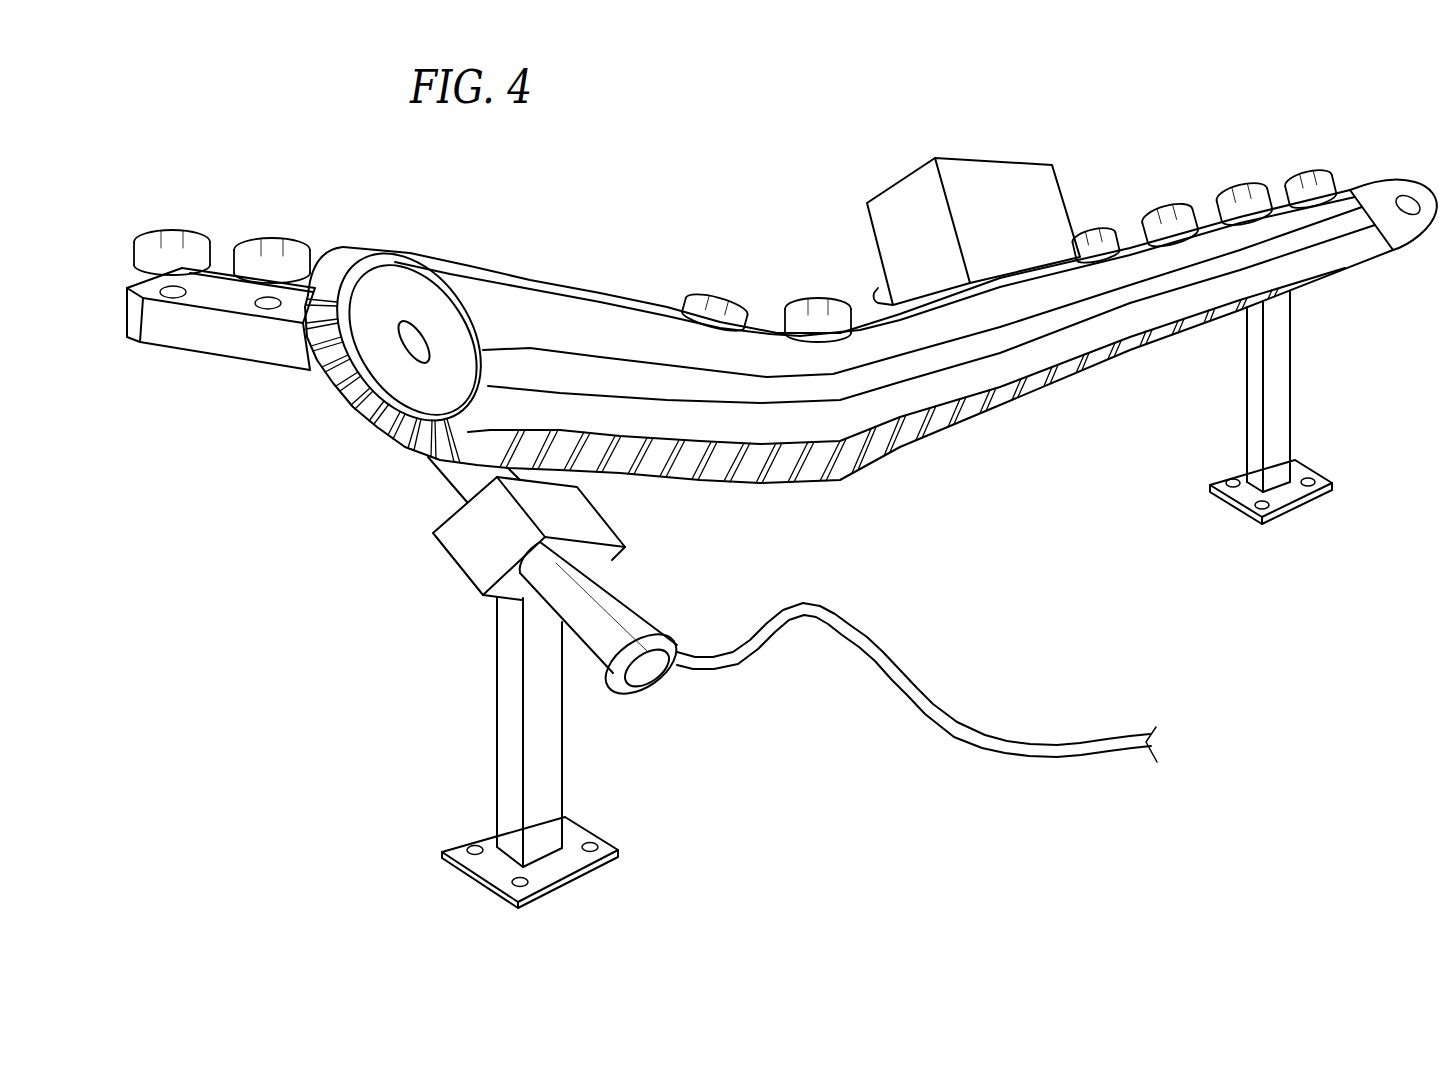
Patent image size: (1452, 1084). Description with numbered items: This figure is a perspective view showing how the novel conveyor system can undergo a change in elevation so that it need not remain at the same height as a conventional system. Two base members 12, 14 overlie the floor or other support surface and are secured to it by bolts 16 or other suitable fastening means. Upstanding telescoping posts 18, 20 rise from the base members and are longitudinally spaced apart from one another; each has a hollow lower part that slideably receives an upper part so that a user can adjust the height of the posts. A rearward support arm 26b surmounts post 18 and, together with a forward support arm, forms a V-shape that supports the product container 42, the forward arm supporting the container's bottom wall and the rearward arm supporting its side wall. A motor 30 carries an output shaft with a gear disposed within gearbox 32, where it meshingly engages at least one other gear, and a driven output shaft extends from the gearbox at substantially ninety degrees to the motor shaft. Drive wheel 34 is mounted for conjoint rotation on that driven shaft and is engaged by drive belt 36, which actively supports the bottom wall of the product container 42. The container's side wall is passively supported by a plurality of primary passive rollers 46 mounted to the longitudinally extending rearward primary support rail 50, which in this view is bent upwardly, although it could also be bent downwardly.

The base member 12 is at (486, 832).
The base member 14 is at (1245, 497).
The bolts 16 is at (1235, 484).
The telescoping post 18 is at (475, 670).
The telescoping post 20 is at (1228, 387).
The rearward support arm 26b is at (455, 485).
The motor 30 is at (630, 598).
The gearbox 32 is at (480, 550).
The drive wheel 34 is at (395, 290).
The drive belt 36 is at (935, 440).
The product container 42 is at (867, 217).
The primary passive rollers 46 is at (817, 297).
The rearward primary support rail 50 is at (258, 370).